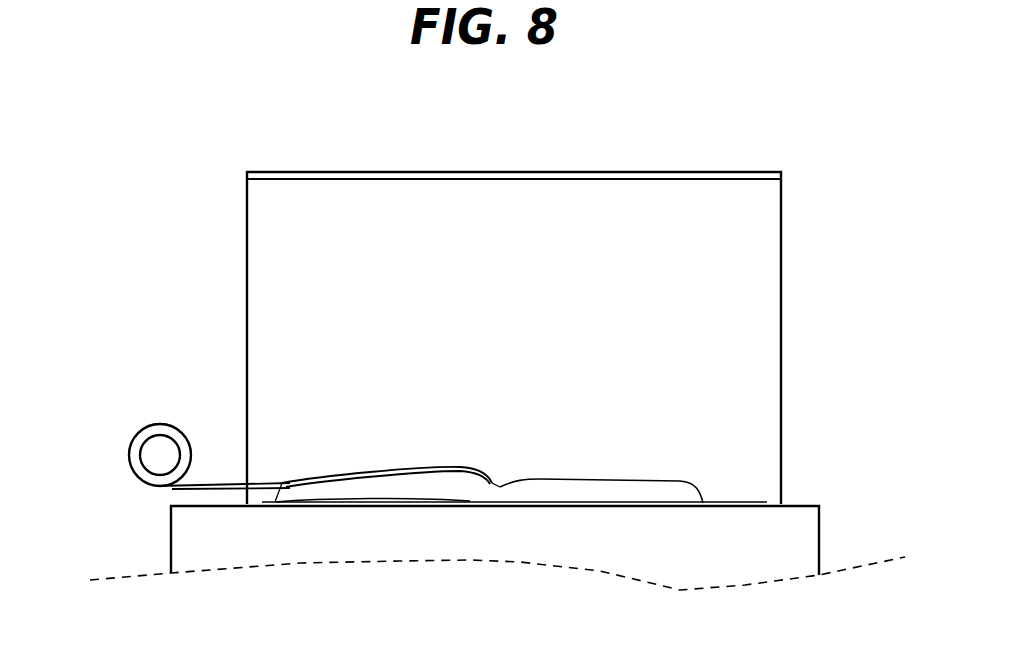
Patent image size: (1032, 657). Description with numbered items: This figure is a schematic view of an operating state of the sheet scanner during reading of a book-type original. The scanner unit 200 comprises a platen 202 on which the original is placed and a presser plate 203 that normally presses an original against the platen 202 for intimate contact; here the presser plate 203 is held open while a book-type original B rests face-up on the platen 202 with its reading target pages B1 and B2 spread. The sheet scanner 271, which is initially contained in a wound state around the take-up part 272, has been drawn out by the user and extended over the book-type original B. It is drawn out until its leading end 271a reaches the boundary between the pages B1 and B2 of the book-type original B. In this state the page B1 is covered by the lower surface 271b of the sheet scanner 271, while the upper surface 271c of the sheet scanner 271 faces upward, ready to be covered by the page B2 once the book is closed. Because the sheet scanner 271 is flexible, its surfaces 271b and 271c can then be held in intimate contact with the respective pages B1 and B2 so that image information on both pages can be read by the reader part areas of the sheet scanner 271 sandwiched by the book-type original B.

The presser plate 203 is at (515, 171).
The scanner unit 200 is at (800, 505).
The platen 202 is at (742, 510).
The sheet scanner 271 is at (160, 424).
The take-up part 272 is at (127, 460).
The upper surface 271c is at (210, 483).
The lower surface 271b is at (182, 488).
The leading end 271a is at (492, 484).
The page B2 is at (449, 468).
The page B1 is at (366, 478).
The book-type original B is at (625, 494).